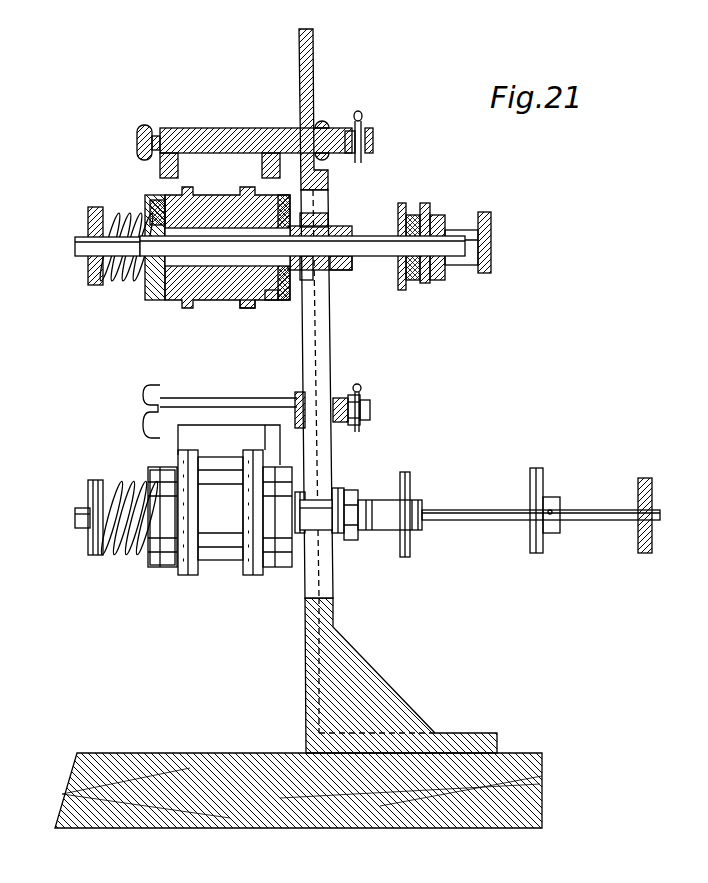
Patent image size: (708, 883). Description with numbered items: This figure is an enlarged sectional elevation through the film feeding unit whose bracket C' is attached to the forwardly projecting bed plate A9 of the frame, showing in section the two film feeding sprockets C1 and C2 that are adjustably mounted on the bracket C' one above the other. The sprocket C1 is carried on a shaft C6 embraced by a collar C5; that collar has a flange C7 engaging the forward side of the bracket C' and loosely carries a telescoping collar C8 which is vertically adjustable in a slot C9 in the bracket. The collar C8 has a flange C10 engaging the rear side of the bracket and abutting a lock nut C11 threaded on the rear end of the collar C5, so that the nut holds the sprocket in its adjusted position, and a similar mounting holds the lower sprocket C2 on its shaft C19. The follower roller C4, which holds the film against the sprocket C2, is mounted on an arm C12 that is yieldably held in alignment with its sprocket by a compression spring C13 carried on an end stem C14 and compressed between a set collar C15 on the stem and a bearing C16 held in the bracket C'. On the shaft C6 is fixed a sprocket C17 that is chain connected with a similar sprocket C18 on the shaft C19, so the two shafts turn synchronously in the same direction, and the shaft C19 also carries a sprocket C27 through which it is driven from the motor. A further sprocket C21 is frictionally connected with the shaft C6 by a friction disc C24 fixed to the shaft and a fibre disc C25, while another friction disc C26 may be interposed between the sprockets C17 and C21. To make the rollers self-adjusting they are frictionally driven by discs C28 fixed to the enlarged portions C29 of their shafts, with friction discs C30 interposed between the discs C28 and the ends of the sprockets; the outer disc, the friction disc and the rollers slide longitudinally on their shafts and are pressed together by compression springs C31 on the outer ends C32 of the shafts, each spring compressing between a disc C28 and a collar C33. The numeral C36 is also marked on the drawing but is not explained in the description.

The bracket C' is at (374, 391).
The bed plate A9 is at (238, 770).
The sprocket C1 is at (205, 263).
The sprocket C2 is at (172, 577).
The follower roller C4 is at (220, 458).
The collar C5 is at (322, 228).
The shaft C6 is at (362, 243).
The flange C7 is at (273, 297).
The telescoping collar C8 is at (313, 262).
The slot C9 is at (330, 352).
The flange C10 is at (346, 268).
The lock nut C11 is at (342, 228).
The arm C12 is at (233, 128).
The compression spring C13 is at (343, 130).
The end stem C14 is at (373, 138).
The set collar C15 is at (360, 123).
The bearing C16 is at (321, 121).
The sprocket C17 is at (402, 283).
The sprocket C18 is at (412, 497).
The shaft C19 is at (462, 522).
The sprocket C21 is at (424, 287).
The friction disc C24 is at (452, 224).
The frictional disc C25 is at (432, 213).
The friction disc C26 is at (412, 283).
The sprocket C27 is at (532, 556).
The disc C28 is at (290, 192).
The enlarged portion C29 is at (150, 300).
The friction disc C30 is at (150, 207).
The compression spring C31 is at (108, 267).
The outer end C32 is at (80, 238).
The collar C33 is at (90, 210).
The bore C36 is at (262, 283).